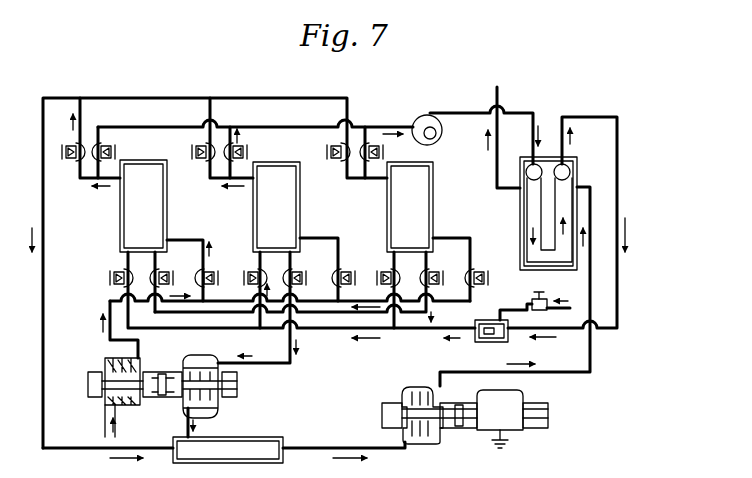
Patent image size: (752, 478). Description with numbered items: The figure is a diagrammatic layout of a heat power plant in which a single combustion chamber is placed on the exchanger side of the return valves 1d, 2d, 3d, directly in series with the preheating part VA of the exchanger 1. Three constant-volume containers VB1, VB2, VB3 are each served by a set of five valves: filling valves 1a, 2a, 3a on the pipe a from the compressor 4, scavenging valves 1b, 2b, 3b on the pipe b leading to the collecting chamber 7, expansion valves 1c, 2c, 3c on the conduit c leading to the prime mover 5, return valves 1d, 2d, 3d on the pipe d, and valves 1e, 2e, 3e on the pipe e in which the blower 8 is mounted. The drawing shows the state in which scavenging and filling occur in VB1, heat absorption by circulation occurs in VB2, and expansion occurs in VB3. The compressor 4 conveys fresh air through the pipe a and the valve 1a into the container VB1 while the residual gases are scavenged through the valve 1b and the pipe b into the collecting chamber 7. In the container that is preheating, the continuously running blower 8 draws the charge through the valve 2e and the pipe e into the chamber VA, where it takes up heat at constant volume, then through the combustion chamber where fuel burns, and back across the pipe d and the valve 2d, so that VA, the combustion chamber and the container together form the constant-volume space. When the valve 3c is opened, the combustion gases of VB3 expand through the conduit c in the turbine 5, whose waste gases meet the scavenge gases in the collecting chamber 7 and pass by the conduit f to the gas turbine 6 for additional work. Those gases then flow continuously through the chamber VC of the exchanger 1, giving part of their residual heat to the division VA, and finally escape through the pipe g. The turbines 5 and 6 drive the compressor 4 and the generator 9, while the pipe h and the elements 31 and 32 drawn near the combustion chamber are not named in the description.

The exchanger 1 is at (517, 221).
The compressor 4 is at (105, 363).
The prime mover 5 is at (218, 404).
The gas turbine 6 is at (440, 440).
The collecting chamber 7 is at (192, 463).
The blower 8 is at (421, 116).
The generator 9 is at (514, 433).
The valve B 31 is at (488, 342).
The valve 32 is at (531, 294).
The valve 1a is at (203, 270).
The valve 1b is at (85, 142).
The valve 1c is at (152, 282).
The valve 1d is at (108, 278).
The valve 1e is at (115, 152).
The valve 2a is at (332, 269).
The valve 2b is at (217, 142).
The valve 2c is at (283, 290).
The valve 2d is at (248, 285).
The valve 2e is at (249, 152).
The valve 3a is at (470, 269).
The valve 3b is at (332, 162).
The valve 3c is at (418, 290).
The valve 3d is at (381, 284).
The valve 3e is at (381, 152).
The pipe a is at (277, 322).
The pipe b is at (209, 277).
The conduit c is at (290, 344).
The pipe d is at (301, 295).
The pipe e is at (255, 121).
The conduit f is at (436, 322).
The pipe g is at (498, 137).
The pipe h is at (524, 313).
The chamber of the exchanger VA is at (528, 238).
The container VB1 is at (143, 206).
The container VB2 is at (276, 207).
The container VB3 is at (410, 207).
The chamber of the exchanger VC is at (526, 254).